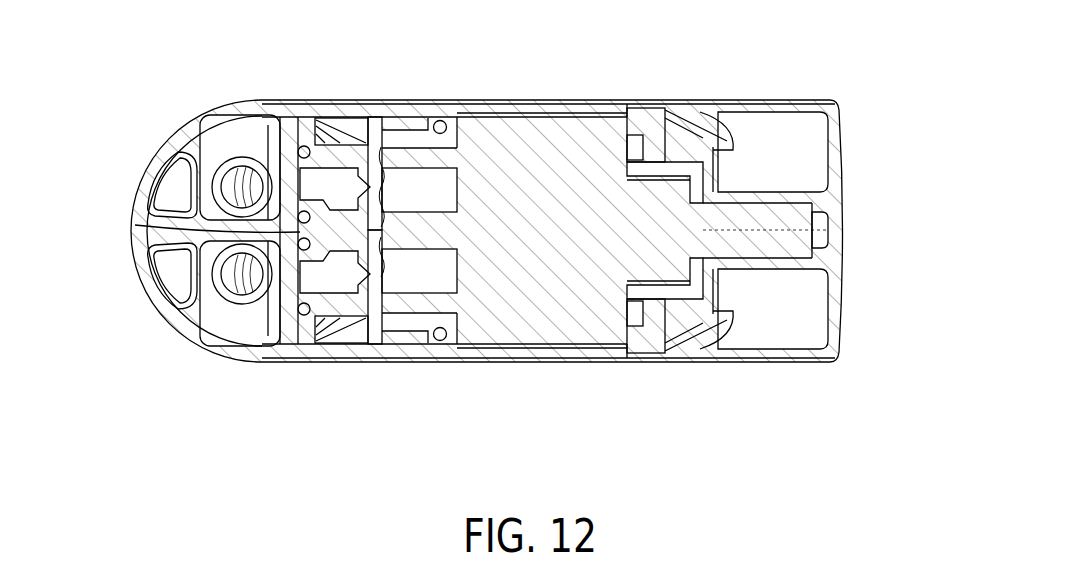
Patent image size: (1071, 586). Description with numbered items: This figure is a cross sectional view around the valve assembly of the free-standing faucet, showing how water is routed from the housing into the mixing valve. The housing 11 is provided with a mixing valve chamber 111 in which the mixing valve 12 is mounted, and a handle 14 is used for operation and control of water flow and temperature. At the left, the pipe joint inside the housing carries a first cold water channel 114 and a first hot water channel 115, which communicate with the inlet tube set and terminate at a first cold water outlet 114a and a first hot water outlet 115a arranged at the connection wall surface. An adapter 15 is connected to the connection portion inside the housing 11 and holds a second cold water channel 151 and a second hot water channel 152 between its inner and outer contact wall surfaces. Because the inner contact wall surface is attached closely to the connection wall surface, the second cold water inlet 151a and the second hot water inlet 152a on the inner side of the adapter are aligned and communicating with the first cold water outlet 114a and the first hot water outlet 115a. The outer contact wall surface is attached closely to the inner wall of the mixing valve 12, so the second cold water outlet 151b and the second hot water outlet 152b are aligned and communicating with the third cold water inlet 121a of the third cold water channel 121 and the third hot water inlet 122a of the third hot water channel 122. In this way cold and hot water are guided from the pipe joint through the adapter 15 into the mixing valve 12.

The housing 11 is at (560, 117).
The mixing valve 12 is at (597, 140).
The handle 14 is at (842, 233).
The adapter 15 is at (148, 233).
The mixing valve chamber 111 is at (572, 322).
The first cold water channel 114 is at (230, 278).
The first cold water outlet 114a is at (288, 282).
The first hot water channel 115 is at (222, 183).
The first hot water outlet 115a is at (288, 180).
The third cold water channel 121 is at (470, 300).
The third cold water inlet 121a is at (392, 322).
The third hot water channel 122 is at (445, 188).
The third hot water inlet 122a is at (440, 120).
The second cold water channel 151 is at (340, 282).
The second cold water inlet 151a is at (335, 320).
The second cold water outlet 151b is at (384, 290).
The second hot water channel 152 is at (338, 180).
The second hot water inlet 152a is at (345, 142).
The second hot water outlet 152b is at (384, 175).